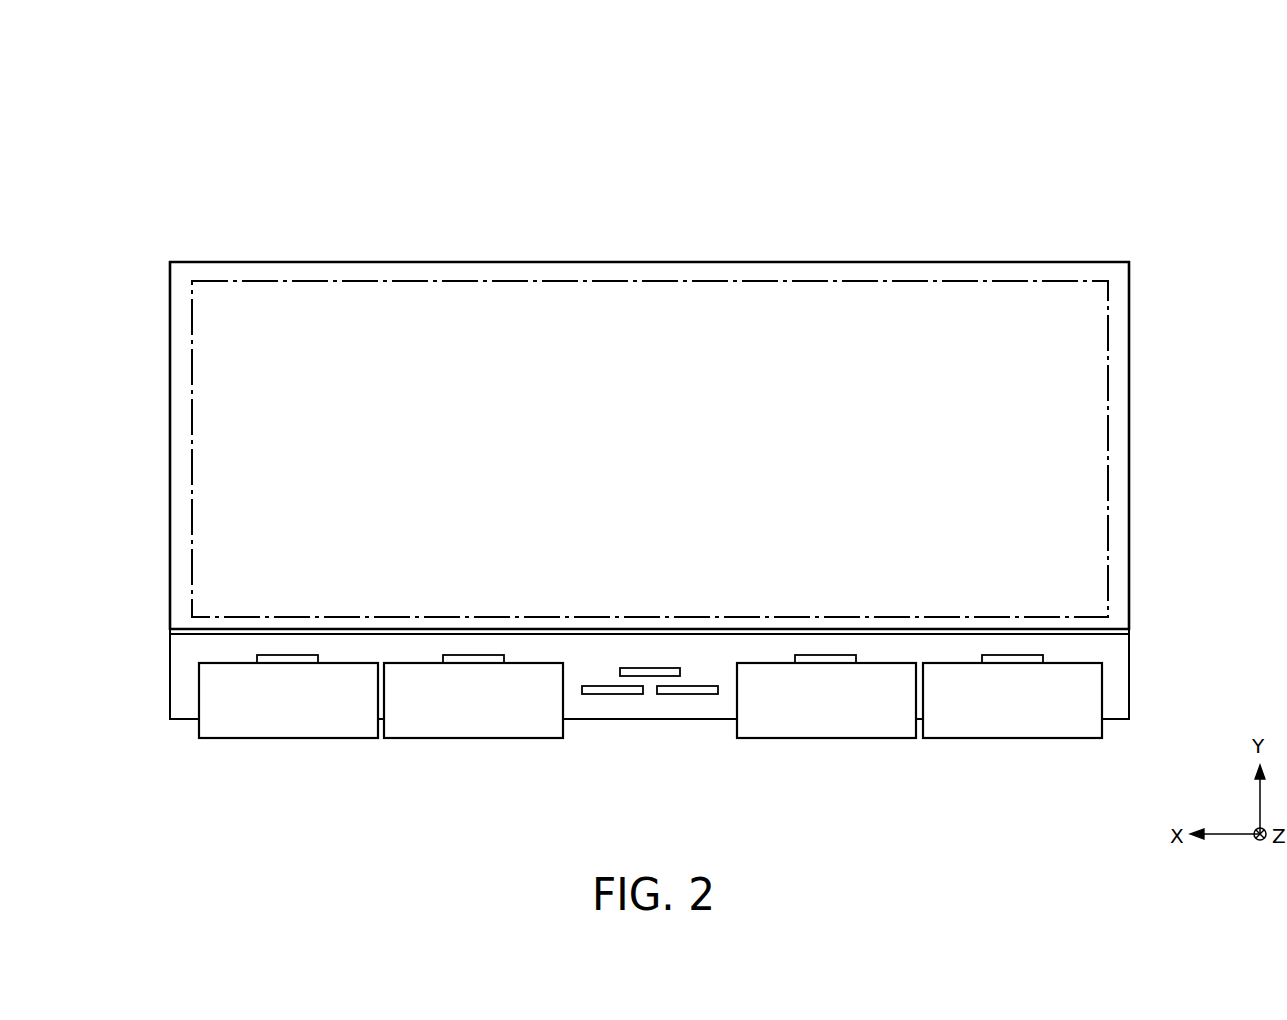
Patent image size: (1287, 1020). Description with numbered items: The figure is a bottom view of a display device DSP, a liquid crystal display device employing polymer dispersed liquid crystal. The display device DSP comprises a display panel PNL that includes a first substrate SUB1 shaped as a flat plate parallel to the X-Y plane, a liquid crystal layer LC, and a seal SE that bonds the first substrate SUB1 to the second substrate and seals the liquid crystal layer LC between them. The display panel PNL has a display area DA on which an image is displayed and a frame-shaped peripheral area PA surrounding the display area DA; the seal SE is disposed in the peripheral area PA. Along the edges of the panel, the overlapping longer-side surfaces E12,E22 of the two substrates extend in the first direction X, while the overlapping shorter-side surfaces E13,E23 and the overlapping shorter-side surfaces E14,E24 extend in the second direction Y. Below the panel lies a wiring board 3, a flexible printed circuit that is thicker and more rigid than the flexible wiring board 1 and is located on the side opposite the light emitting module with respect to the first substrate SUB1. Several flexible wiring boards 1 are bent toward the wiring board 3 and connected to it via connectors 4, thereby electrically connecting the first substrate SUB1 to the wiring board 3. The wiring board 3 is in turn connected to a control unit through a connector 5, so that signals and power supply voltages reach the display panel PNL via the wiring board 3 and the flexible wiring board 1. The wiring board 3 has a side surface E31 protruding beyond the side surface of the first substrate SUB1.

The display device DSP is at (1108, 168).
The display panel PNL is at (1097, 262).
The first substrate SUB1 is at (1118, 610).
The liquid crystal layer LC is at (1087, 563).
The seal SE is at (1120, 522).
The display area DA is at (1085, 444).
The peripheral area PA is at (1121, 480).
The side surfaces E12,E22 is at (864, 258).
The side surfaces E13,E23 is at (1136, 347).
The side surfaces E14,E24 is at (167, 281).
The side surface E31 is at (718, 732).
The flexible wiring board 1 is at (273, 734).
The wiring board 3 is at (1115, 709).
The connector 4 is at (303, 660).
The connector 5 is at (650, 676).